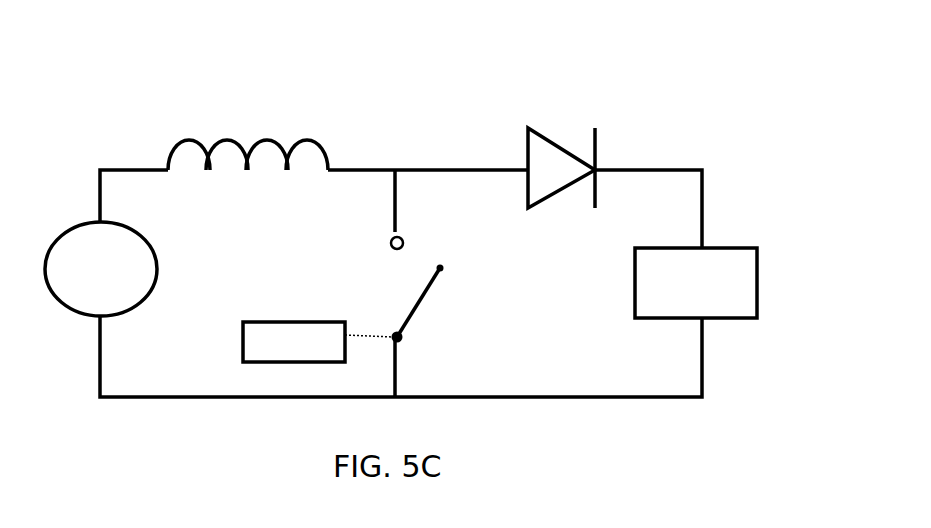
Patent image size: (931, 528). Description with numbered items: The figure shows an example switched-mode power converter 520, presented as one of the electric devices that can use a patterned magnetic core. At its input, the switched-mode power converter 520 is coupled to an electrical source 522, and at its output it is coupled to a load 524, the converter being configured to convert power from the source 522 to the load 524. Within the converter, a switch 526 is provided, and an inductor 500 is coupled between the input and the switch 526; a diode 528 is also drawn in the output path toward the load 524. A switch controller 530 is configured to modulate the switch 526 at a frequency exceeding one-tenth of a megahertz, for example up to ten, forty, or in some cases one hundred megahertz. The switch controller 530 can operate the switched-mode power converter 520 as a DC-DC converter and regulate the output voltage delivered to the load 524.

The switched-mode power converter 520 is at (151, 66).
The inductor 500 is at (308, 142).
The electrical source 522 is at (152, 248).
The load 524 is at (757, 273).
The switch 526 is at (459, 313).
The diode 528 is at (528, 150).
The switch controller 530 is at (288, 320).